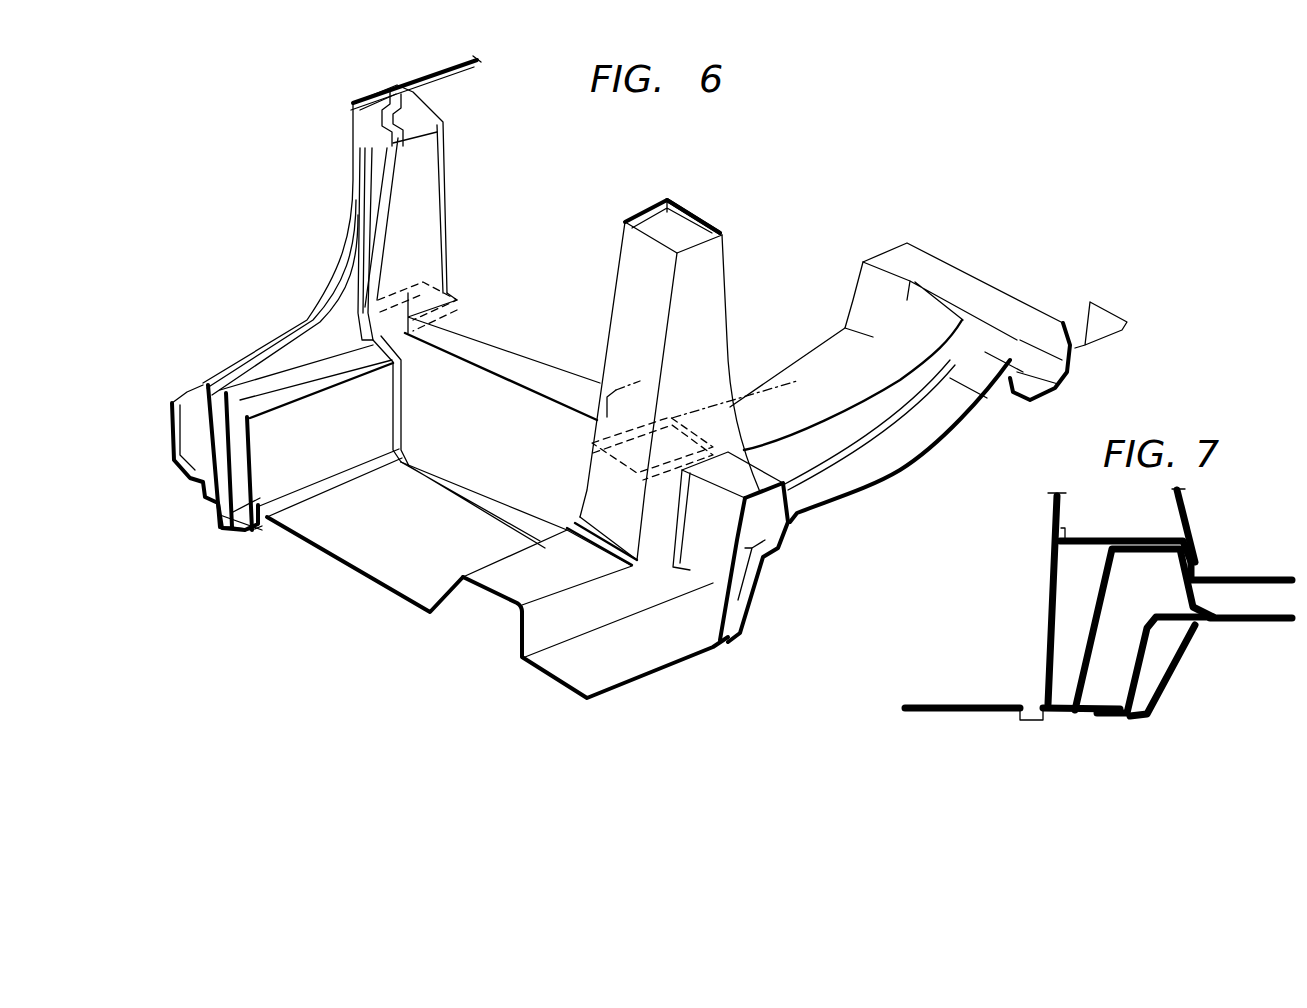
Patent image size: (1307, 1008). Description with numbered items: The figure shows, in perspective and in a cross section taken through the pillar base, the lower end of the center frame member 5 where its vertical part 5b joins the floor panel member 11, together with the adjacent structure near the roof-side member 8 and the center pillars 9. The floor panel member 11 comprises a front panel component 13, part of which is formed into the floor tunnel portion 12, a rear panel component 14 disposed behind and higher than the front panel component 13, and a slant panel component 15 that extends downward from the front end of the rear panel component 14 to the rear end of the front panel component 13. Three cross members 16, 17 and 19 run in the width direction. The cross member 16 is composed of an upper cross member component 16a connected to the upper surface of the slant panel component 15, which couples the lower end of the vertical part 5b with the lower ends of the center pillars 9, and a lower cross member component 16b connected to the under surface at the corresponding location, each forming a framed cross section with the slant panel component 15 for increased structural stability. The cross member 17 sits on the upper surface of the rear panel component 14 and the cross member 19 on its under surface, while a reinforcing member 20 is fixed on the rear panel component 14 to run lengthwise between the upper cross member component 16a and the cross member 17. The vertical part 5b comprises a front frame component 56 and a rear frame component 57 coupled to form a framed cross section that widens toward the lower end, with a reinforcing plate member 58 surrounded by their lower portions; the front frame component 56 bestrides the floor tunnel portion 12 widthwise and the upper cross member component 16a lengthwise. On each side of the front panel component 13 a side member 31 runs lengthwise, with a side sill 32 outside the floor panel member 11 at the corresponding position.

In FIG. 6, the center frame member 5 is at (694, 190).
In FIG. 6, the vertical part 5b is at (619, 222).
In FIG. 7, the vertical part 5b is at (1041, 559).
In FIG. 6, the roof rail member 8 is at (462, 70).
In FIG. 6, the center pillar 9 is at (350, 117).
In FIG. 6, the floor panel member 11 is at (362, 590).
In FIG. 6, the floor tunnel portion 12 is at (507, 585).
In FIG. 7, the floor tunnel portion 12 is at (971, 674).
In FIG. 6, the front panel component 13 is at (660, 650).
In FIG. 6, the rear panel component 14 is at (828, 500).
In FIG. 7, the rear panel component 14 is at (1259, 624).
In FIG. 6, the slant panel component 15 is at (738, 600).
In FIG. 7, the slant panel component 15 is at (1141, 652).
In FIG. 6, the cross member 16 is at (494, 309).
In FIG. 6, the upper cross member component 16a is at (761, 478).
In FIG. 7, the upper cross member component 16a is at (1098, 612).
In FIG. 6, the lower cross member component 16b is at (777, 553).
In FIG. 7, the lower cross member component 16b is at (1169, 676).
In FIG. 6, the cross member 17 is at (1003, 297).
In FIG. 6, the cross member 19 is at (1053, 393).
In FIG. 6, the reinforcing member 20 is at (819, 385).
In FIG. 7, the reinforcing member 20 is at (1259, 578).
In FIG. 6, the side member 31 is at (252, 463).
In FIG. 6, the side sill 32 is at (173, 420).
In FIG. 6, the front frame component 56 is at (663, 260).
In FIG. 7, the front frame component 56 is at (1047, 612).
In FIG. 6, the rear frame component 57 is at (685, 224).
In FIG. 7, the rear frame component 57 is at (1191, 501).
In FIG. 6, the reinforcing plate member 58 is at (592, 452).
In FIG. 7, the reinforcing plate member 58 is at (1101, 538).